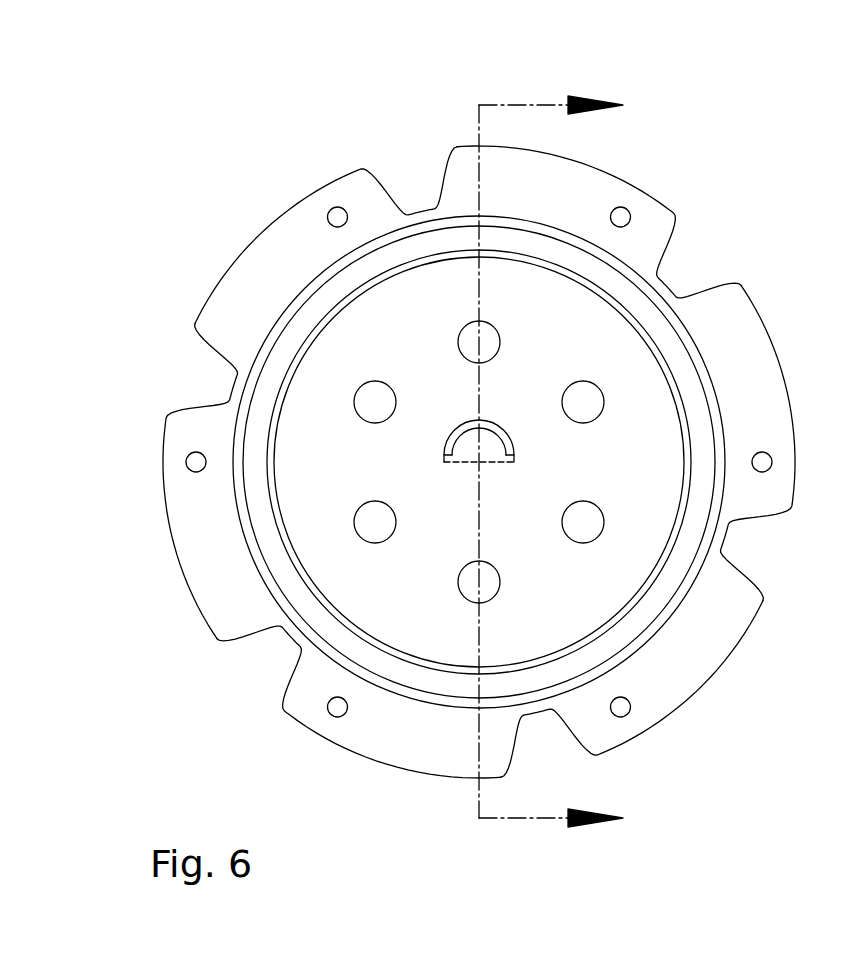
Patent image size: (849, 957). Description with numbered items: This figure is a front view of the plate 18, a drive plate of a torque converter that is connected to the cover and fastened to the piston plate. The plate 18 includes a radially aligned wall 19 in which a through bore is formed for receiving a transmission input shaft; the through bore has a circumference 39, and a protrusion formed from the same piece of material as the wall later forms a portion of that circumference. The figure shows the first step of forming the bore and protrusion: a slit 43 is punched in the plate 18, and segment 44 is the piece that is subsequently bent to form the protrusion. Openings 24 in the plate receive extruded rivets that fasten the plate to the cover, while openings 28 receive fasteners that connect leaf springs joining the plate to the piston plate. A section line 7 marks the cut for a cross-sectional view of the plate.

The plate 18 is at (157, 165).
The radially aligned wall 19 is at (532, 362).
The openings 24 is at (372, 393).
The openings 28 is at (335, 205).
The circumference 39 is at (513, 447).
The slit 43 is at (468, 428).
The segment 44 is at (468, 450).
The section line 7- 7 is at (563, 462).